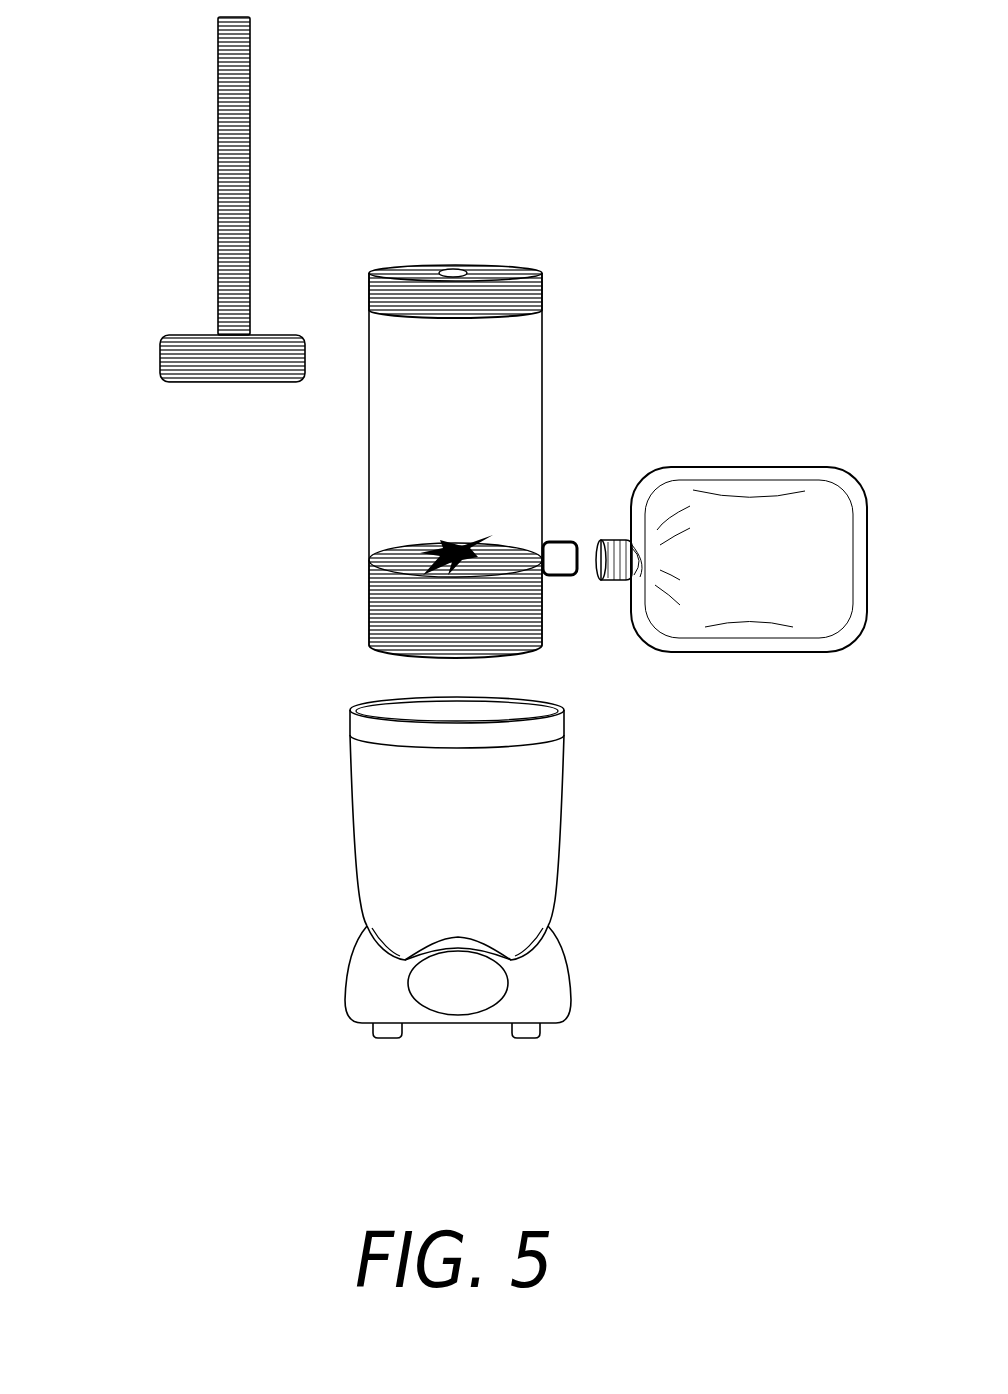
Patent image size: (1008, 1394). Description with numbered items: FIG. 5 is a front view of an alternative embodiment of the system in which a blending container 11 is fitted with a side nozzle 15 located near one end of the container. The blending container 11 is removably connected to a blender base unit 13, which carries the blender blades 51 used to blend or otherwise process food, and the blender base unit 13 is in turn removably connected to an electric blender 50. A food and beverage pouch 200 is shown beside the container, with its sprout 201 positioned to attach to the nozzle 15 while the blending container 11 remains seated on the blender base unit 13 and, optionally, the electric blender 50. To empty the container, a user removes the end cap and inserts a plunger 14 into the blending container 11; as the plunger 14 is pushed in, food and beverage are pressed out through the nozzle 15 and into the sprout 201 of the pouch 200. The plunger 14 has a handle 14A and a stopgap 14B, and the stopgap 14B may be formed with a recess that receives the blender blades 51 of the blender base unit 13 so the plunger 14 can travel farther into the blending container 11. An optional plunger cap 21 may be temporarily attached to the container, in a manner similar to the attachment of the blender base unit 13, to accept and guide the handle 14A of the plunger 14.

The plunger 14 is at (210, 256).
The handle 14A is at (235, 175).
The stopgap 14B is at (210, 360).
The plunger cap 21 is at (462, 302).
The blending container 11 is at (462, 415).
The blender base unit 13 is at (428, 610).
The blender blades 51 is at (435, 540).
The nozzle 15 is at (558, 550).
The food and beverage pouch 200 is at (738, 567).
The sprout 201 is at (610, 578).
The electric blender 50 is at (435, 843).